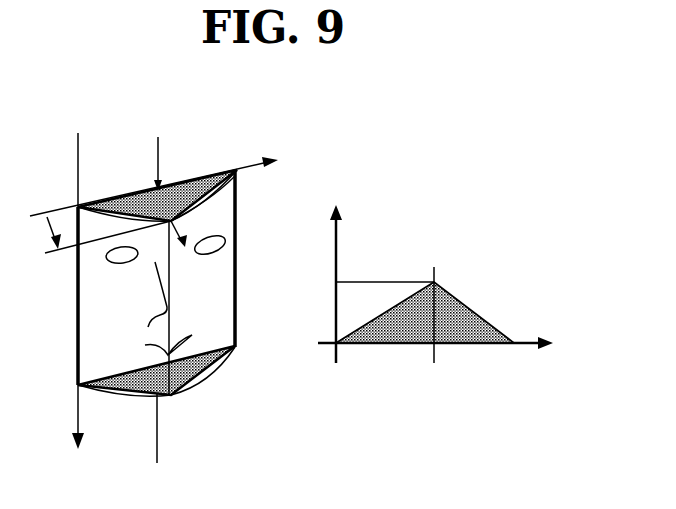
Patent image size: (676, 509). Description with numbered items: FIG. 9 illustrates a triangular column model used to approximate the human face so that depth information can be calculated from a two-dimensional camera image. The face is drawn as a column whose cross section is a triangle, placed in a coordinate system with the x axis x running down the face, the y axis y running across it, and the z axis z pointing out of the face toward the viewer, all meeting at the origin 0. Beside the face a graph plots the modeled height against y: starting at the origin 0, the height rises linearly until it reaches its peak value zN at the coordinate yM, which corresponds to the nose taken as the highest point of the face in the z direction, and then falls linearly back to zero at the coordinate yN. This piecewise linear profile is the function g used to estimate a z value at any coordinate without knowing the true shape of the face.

The x axis x is at (74, 307).
The y axis y is at (304, 249).
The z axis z is at (257, 269).
The origin 0 is at (199, 293).
The y coordinate of the nose yM is at (304, 300).
The y coordinate of the face edge yN is at (378, 271).
The distance from the x axis to the nose zN is at (363, 282).